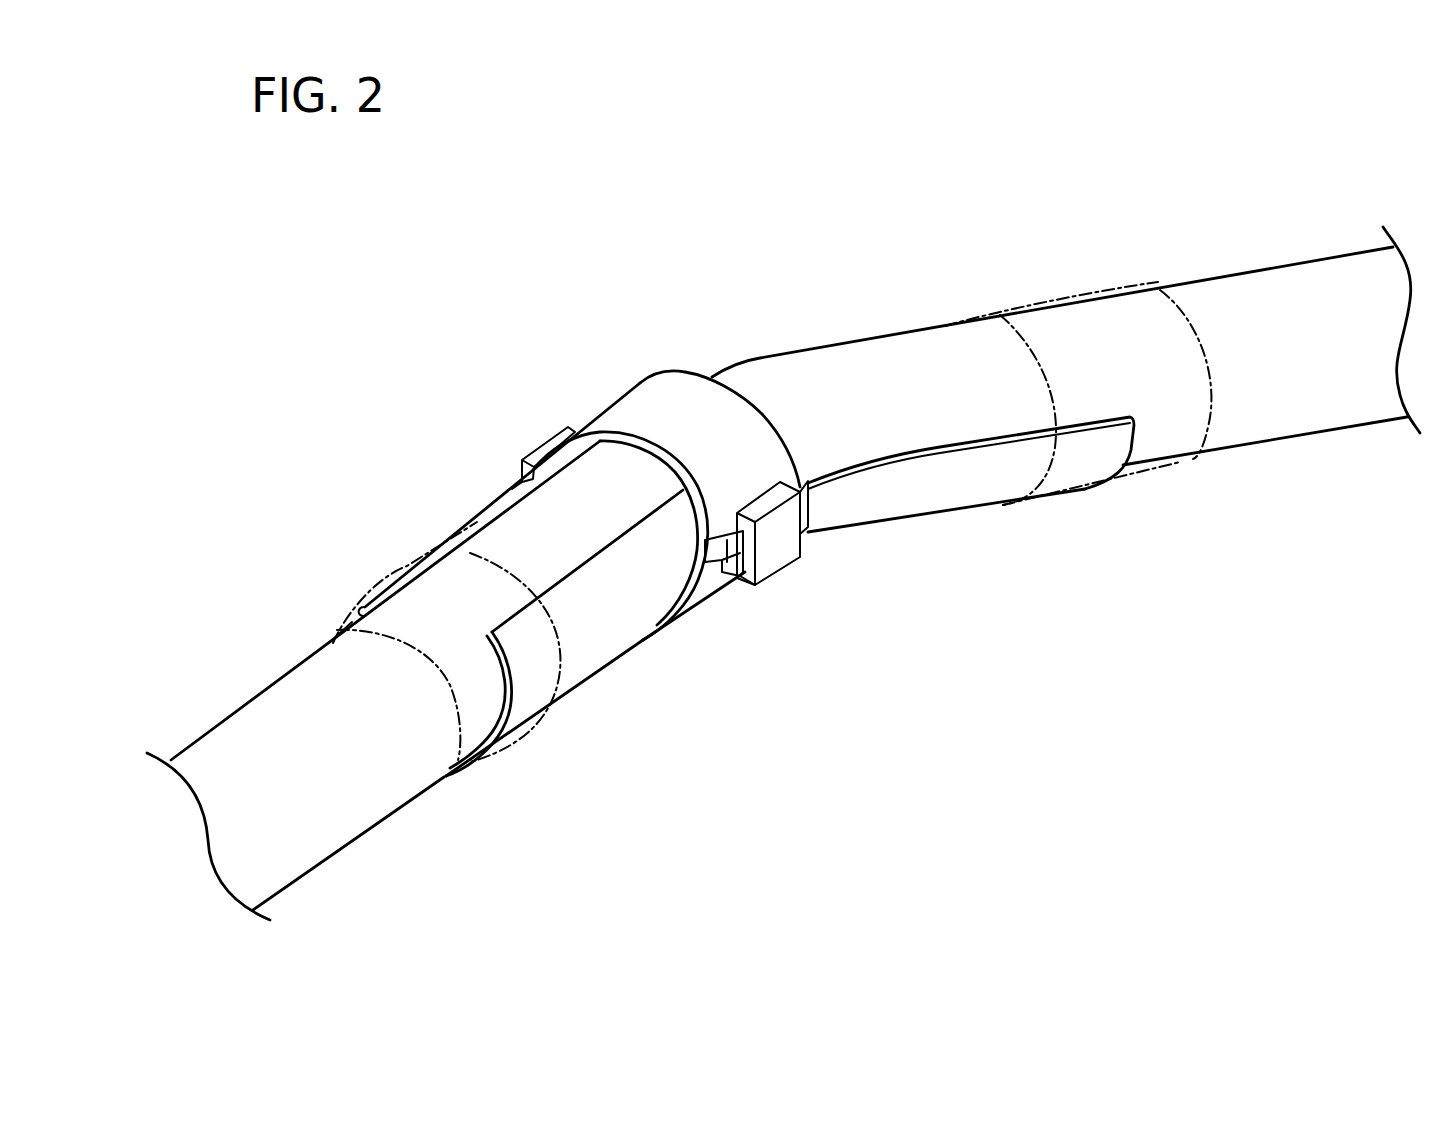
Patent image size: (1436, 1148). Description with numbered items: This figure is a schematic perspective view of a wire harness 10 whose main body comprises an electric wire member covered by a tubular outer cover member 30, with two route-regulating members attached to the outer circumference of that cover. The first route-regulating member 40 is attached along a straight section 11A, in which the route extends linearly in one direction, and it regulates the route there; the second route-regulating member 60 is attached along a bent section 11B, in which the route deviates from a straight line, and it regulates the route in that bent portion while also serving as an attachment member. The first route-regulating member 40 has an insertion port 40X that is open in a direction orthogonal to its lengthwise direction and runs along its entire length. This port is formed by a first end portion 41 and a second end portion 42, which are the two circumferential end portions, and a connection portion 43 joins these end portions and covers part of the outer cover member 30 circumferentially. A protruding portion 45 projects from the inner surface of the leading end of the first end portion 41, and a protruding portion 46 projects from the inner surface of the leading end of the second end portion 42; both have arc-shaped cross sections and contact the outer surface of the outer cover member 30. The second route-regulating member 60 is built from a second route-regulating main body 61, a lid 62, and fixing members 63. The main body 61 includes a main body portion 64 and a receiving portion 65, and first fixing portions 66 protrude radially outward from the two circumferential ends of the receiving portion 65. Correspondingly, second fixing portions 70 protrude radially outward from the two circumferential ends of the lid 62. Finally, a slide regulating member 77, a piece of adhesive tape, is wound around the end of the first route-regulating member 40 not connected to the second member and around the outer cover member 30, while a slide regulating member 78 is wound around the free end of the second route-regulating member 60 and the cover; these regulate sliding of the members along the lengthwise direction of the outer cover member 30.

The wire harness 10 is at (1338, 168).
The straight section 11A is at (508, 532).
The bent section 11B is at (856, 358).
The outer cover member 30 is at (262, 686).
The first route-regulating member 40 is at (628, 650).
The insertion port 40X is at (578, 561).
The first end portion 41 is at (459, 538).
The second end portion 42 is at (492, 633).
The connection portion 43 is at (573, 678).
The protruding portion 45 is at (370, 609).
The protruding portion 46 is at (485, 641).
The second route-regulating member 60 is at (955, 510).
The second route-regulating main body 61 is at (883, 523).
The lid 62 is at (667, 389).
The fixing member 63 is at (545, 449).
The main body portion 64 is at (928, 478).
The receiving portion 65 is at (711, 596).
The first fixing portion 66 is at (748, 589).
The second fixing portion 70 is at (733, 545).
The slide regulating member 77 is at (392, 578).
The slide regulating member 78 is at (1123, 291).